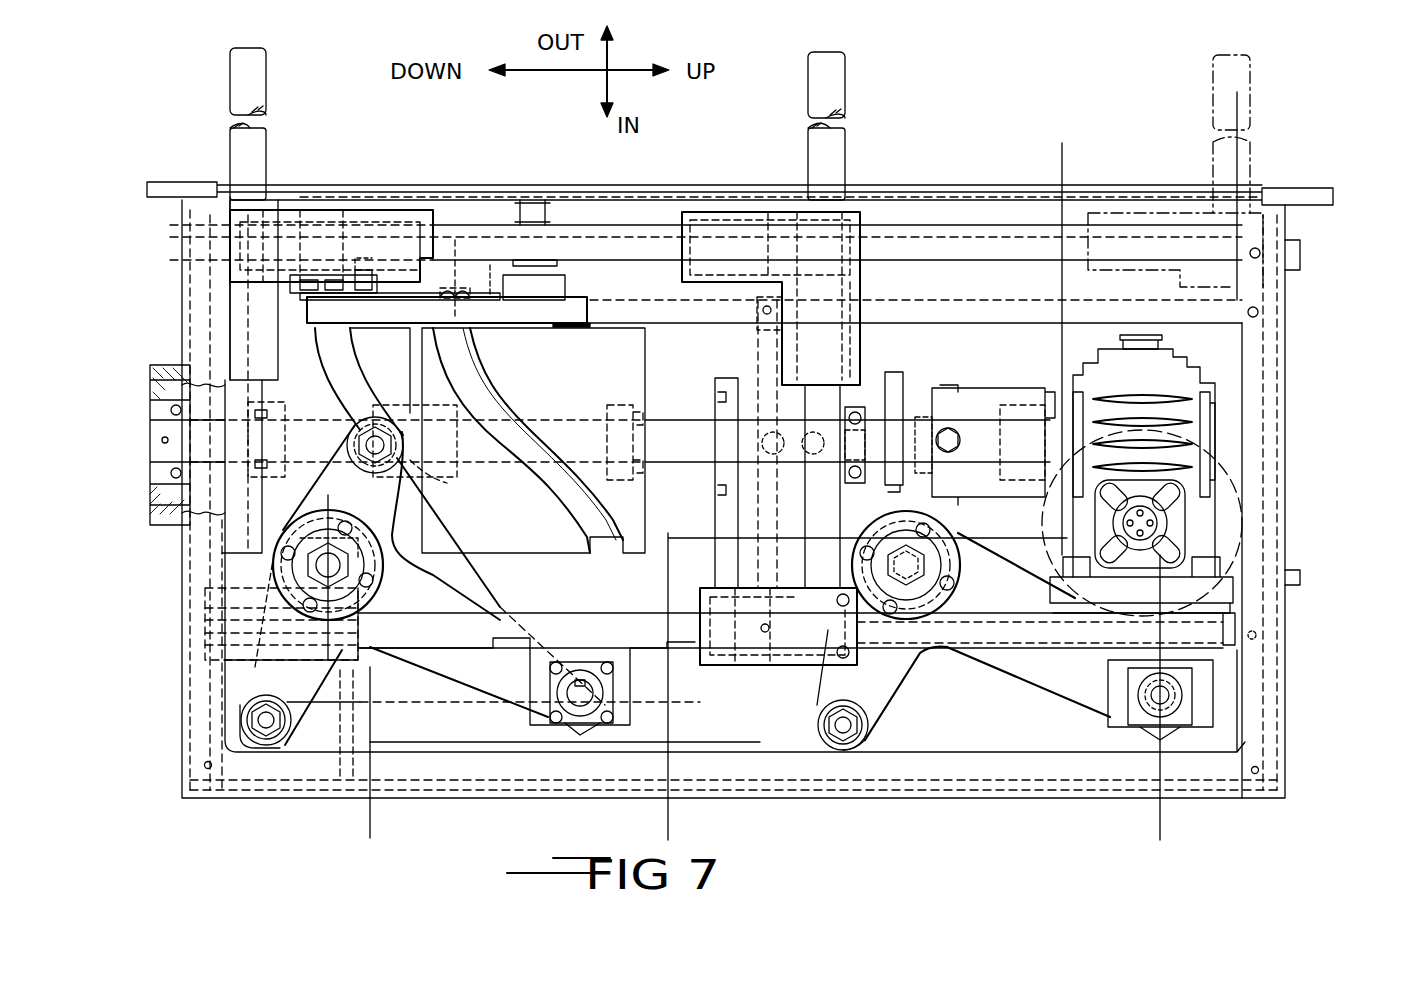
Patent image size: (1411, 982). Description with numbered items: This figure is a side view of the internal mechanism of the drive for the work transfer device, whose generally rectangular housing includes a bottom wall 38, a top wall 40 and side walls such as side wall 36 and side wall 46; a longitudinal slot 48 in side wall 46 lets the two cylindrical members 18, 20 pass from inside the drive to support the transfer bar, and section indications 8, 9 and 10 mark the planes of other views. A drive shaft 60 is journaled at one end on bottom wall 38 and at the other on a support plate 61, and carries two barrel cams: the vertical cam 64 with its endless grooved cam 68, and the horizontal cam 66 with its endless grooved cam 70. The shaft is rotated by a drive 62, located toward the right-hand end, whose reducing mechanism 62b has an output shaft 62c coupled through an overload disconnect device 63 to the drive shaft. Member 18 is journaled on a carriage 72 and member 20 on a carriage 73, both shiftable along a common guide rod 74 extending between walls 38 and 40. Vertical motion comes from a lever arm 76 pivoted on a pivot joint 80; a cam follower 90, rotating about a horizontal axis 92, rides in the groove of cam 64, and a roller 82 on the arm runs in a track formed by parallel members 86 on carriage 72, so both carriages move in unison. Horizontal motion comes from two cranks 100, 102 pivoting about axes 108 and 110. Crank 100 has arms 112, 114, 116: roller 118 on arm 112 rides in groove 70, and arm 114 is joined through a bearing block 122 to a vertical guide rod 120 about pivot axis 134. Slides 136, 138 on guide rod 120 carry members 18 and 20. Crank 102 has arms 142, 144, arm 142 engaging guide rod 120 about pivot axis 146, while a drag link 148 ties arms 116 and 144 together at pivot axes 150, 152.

The section line 8- 8 is at (1120, 828).
The section line 9- 9 is at (635, 825).
The section line 10- 10 is at (370, 828).
The cylindrical member 18 is at (268, 150).
The cylindrical member 20 is at (845, 170).
The side wall 36 is at (490, 798).
The bottom wall 38 is at (185, 525).
The top wall 40 is at (1288, 598).
The side wall 46 is at (600, 191).
The longitudinal slot 48 is at (608, 194).
The drive shaft 60 is at (655, 420).
The support plate 61 is at (725, 378).
The drive 62 is at (1218, 372).
The reducing mechanism 62b is at (1208, 440).
The output shaft 62c is at (1030, 415).
The overload disconnect device 63 is at (962, 388).
The barrel cam 64 is at (645, 332).
The barrel cam 66 is at (406, 357).
The endless grooved cam 68 is at (495, 403).
The endless grooved cam 70 is at (348, 376).
The carriage 72 is at (368, 210).
The carriage 73 is at (730, 212).
The guide rod 74 is at (918, 262).
The lever arm 76 is at (490, 293).
The pivot joint 80 is at (575, 273).
The roller 82 is at (316, 298).
The parallel members 86 is at (372, 282).
The cam follower 90 is at (470, 328).
The horizontal axis 92 is at (452, 262).
The crank 100 is at (476, 600).
The crank 102 is at (1015, 678).
The pivot axis 108 is at (376, 578).
The pivot axis 110 is at (930, 560).
The crank arm 112 is at (390, 508).
The crank arm 114 is at (493, 678).
The crank arm 116 is at (298, 686).
The roller 118 is at (448, 490).
The guide rod 120 is at (600, 612).
The bearing block 122 is at (633, 684).
The pivot axis 134 is at (606, 705).
The slide 136 is at (232, 665).
The slide 138 is at (700, 588).
The crank arm 142 is at (1093, 685).
The crank arm 144 is at (896, 667).
The pivot axis 146 is at (1177, 718).
The drag link 148 is at (797, 752).
The pivot axis 150 is at (268, 735).
The pivot axis 152 is at (858, 740).